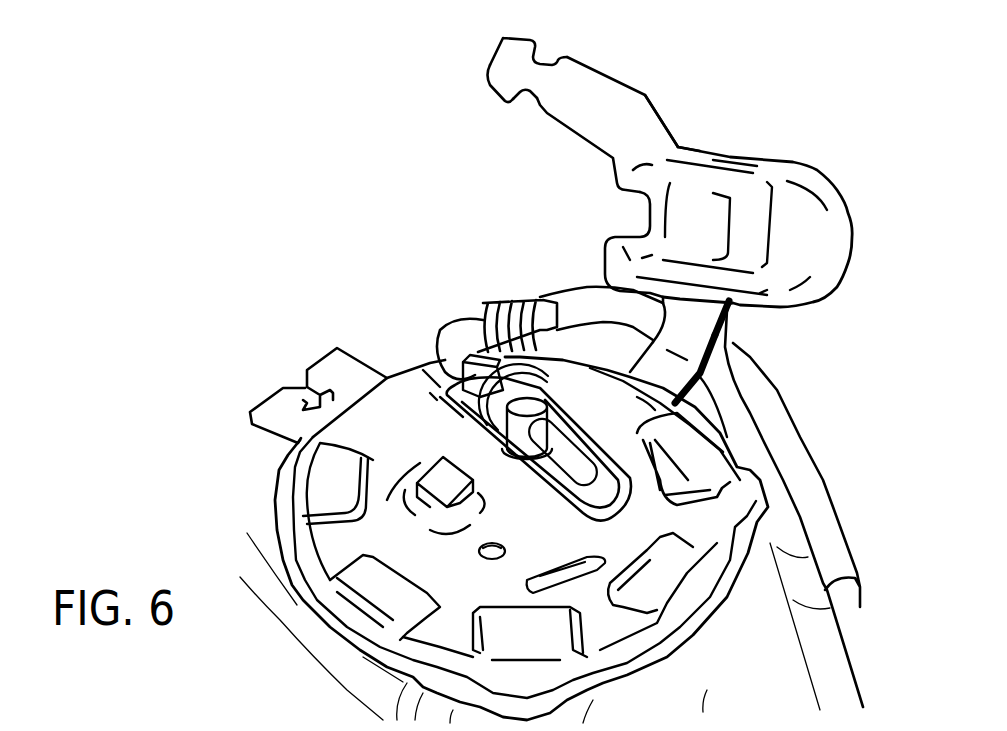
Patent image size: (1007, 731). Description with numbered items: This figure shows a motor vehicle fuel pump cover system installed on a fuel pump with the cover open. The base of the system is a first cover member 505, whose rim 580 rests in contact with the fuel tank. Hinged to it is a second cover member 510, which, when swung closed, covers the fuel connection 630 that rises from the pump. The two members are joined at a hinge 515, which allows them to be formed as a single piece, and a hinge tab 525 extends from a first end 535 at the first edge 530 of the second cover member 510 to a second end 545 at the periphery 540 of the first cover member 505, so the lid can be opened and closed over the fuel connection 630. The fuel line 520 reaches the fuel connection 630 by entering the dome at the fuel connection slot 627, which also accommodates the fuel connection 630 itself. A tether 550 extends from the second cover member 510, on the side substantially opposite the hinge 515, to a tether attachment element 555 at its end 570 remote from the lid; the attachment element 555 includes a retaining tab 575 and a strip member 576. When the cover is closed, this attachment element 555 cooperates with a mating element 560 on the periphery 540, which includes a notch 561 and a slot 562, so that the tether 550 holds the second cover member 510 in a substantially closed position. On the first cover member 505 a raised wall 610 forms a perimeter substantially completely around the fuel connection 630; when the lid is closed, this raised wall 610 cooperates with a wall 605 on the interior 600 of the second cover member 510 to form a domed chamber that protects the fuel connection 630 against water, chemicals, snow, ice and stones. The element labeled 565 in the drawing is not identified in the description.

The first cover member 505 is at (280, 477).
The second cover member 510 is at (843, 188).
The hinge 515 is at (630, 370).
The fuel line 520 is at (837, 500).
The hinge tab 525 is at (713, 341).
The first edge 530 is at (737, 308).
The first end 535 is at (740, 343).
The periphery 540 is at (640, 395).
The second end 545 is at (653, 393).
The tether 550 is at (646, 97).
The tether attachment element 555 is at (530, 38).
The mating element 560 is at (347, 350).
The notch 561 is at (363, 370).
The slot 562 is at (303, 390).
The arm shoulder 565 is at (683, 140).
The end 570 is at (562, 128).
The retaining tab 575 is at (493, 97).
The strip member 576 is at (528, 90).
The rim 580 is at (637, 677).
The interior 600 is at (810, 230).
The wall 605 is at (810, 287).
The raised wall 610 is at (447, 430).
The fuel connection slot 627 is at (642, 209).
The fuel connection 630 is at (544, 447).